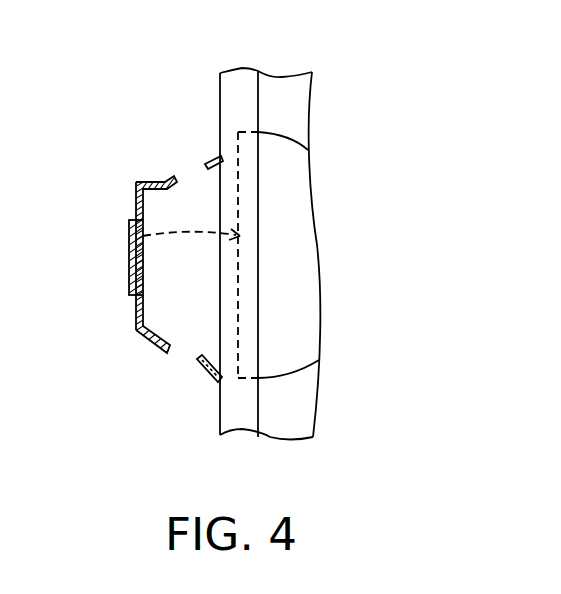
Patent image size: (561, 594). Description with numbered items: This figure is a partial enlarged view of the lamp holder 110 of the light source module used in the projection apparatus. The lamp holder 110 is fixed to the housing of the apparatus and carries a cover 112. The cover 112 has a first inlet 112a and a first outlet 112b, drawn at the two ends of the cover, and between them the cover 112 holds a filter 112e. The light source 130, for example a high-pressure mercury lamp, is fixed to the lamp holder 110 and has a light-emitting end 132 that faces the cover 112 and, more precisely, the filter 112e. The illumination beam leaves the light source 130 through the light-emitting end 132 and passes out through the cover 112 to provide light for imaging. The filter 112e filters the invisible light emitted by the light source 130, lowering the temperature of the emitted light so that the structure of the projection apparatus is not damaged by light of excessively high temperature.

The lamp holder 110 is at (240, 80).
The light source 130 is at (296, 238).
The light-emitting end 132 is at (128, 236).
The cover 112 is at (123, 266).
The first outlet 112b is at (179, 178).
The first inlet 112a is at (168, 352).
The filter 112e is at (135, 272).